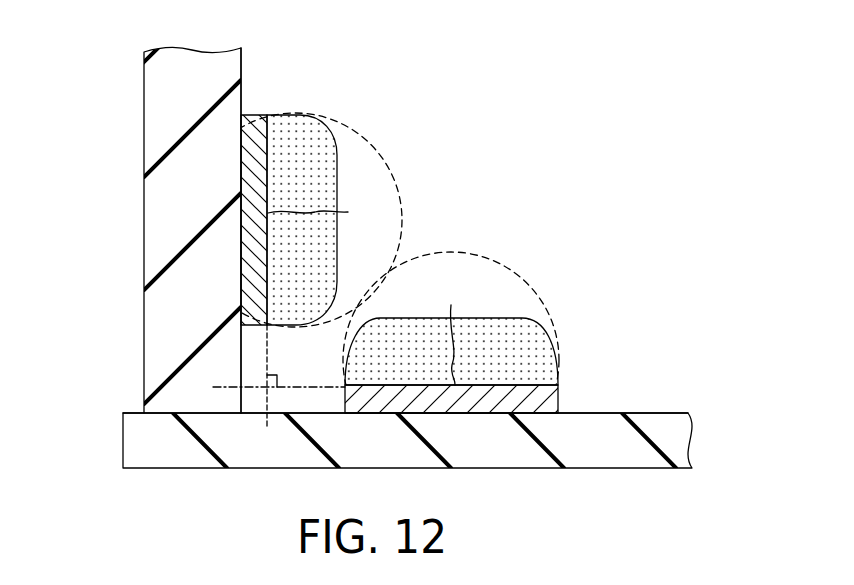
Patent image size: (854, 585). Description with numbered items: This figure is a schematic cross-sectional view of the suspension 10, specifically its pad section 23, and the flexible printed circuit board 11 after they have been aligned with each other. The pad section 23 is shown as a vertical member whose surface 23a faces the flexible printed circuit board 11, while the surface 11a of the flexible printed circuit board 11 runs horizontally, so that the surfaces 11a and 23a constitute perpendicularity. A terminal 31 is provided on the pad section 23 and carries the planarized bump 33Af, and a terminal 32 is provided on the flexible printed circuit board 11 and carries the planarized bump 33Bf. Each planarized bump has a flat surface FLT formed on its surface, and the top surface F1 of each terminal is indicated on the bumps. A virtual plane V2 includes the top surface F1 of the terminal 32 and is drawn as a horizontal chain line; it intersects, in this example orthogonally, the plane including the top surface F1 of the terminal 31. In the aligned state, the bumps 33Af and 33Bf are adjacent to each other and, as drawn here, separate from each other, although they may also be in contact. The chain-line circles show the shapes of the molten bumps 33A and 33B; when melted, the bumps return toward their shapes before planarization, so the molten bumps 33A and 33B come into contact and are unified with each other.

The suspension 10 is at (143, 229).
The pad section 23 is at (145, 123).
The surface of the pad section 23a is at (241, 70).
The flexible printed circuit board 11 is at (618, 468).
The surface of the flexible printed circuit board 11a is at (658, 413).
The terminal 31 is at (259, 113).
The terminal 32 is at (556, 400).
The molten bump 33A is at (401, 196).
The bump 33Af is at (310, 130).
The molten bump 33B is at (479, 252).
The bump 33Bf is at (553, 351).
The flat surface FLT is at (338, 168).
The top surface F1 is at (365, 293).
The virtual plane V2 is at (265, 376).